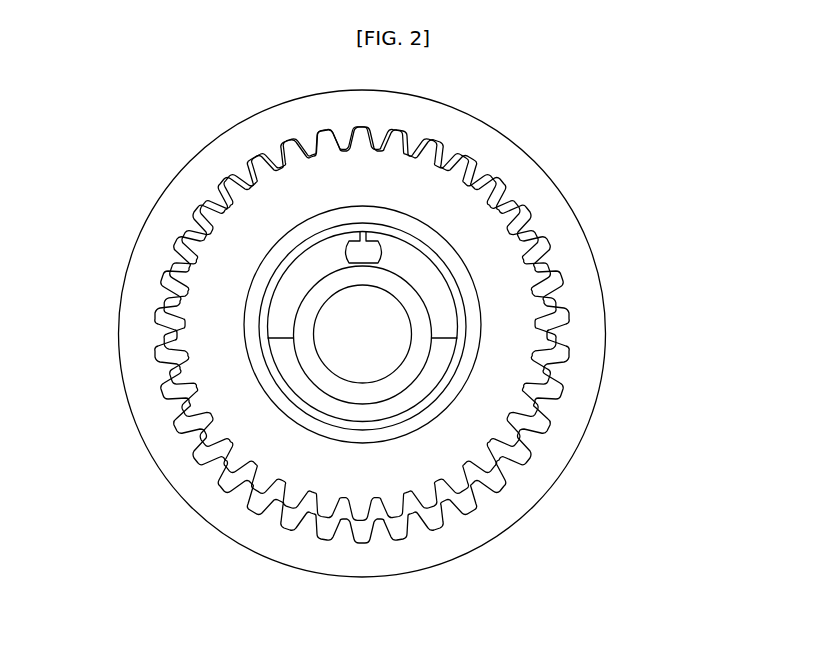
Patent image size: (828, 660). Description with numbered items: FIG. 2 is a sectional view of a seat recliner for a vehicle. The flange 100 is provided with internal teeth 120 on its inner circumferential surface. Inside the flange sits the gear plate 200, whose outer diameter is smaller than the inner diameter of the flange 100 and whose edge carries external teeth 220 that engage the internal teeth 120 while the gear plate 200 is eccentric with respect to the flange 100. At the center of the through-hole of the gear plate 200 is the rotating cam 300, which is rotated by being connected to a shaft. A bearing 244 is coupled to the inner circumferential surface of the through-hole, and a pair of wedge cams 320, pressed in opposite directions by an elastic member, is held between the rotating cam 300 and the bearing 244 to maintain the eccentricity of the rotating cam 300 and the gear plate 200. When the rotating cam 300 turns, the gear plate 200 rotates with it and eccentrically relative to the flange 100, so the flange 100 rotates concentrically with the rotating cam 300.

The flange 100 is at (588, 373).
The internal teeth 120 is at (483, 499).
The gear plate 200 is at (450, 378).
The external teeth 220 is at (540, 423).
The bearing 244 is at (450, 274).
The rotating cam 300 is at (310, 353).
The wedge cam 320 is at (290, 284).